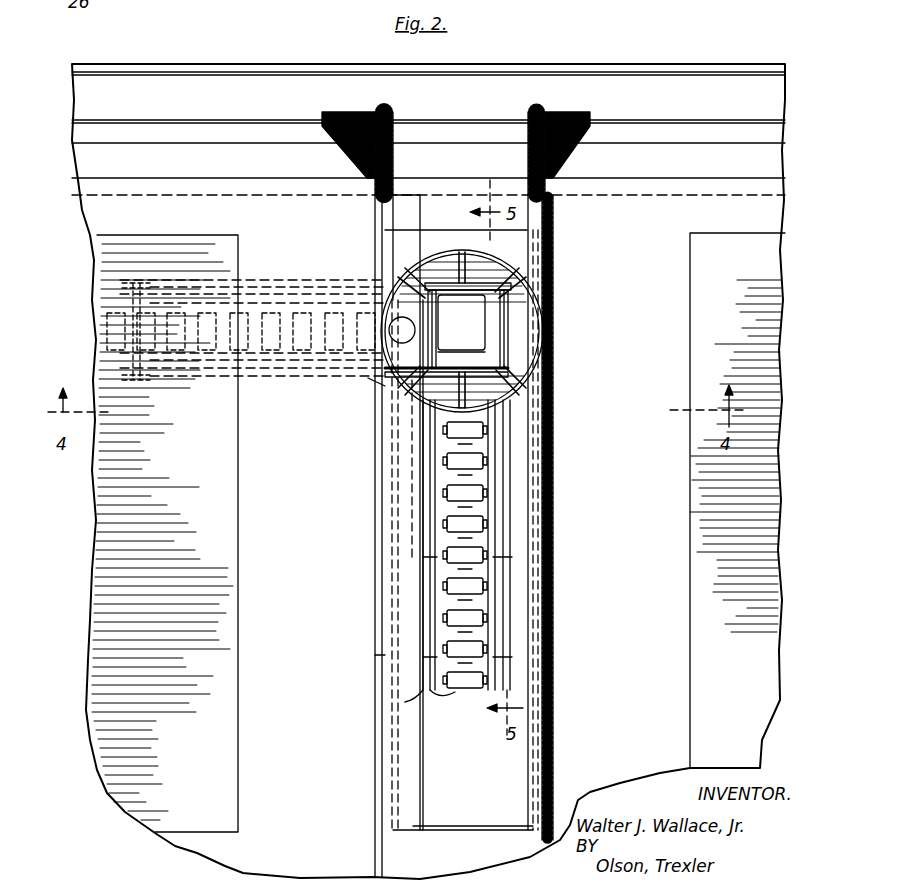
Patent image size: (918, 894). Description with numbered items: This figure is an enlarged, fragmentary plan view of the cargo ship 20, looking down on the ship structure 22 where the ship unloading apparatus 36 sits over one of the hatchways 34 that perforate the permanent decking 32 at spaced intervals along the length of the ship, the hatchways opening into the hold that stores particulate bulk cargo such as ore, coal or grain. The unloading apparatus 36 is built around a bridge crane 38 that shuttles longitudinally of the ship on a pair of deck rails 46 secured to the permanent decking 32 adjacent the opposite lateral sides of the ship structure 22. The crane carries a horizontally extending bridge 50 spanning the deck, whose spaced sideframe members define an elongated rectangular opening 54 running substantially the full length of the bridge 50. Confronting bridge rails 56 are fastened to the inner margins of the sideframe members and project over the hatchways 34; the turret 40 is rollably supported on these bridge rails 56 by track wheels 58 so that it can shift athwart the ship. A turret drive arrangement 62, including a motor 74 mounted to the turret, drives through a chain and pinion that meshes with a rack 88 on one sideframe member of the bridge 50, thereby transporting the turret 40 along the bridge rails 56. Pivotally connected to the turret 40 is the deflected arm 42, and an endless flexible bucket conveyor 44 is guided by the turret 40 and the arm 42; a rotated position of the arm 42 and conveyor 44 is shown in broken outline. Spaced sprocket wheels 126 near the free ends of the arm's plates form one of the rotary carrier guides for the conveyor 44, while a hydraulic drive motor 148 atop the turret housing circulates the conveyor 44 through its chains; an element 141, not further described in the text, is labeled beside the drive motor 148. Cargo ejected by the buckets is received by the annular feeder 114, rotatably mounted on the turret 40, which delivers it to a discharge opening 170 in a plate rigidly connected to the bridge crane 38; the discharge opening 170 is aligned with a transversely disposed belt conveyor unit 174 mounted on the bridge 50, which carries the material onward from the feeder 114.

The cargo ship 20 is at (160, 855).
The ship structure 22 is at (297, 63).
The permanent decking 32 is at (441, 532).
The hatchways 34 is at (234, 622).
The ship unloading apparatus 36 is at (577, 270).
The bridge crane 38 is at (573, 112).
The turret 40 is at (441, 251).
The deflected arm 42 is at (287, 383).
The endless flexible bucket conveyor 44 is at (100, 331).
The deck rails 46 is at (712, 132).
The bridge 50 is at (374, 863).
The rectangular opening 54 is at (505, 773).
The bridge rails 56 is at (397, 435).
The track wheels 58 is at (385, 277).
The turret drive arrangement 62 is at (552, 300).
The motor 74 is at (540, 345).
The rack 88 is at (548, 214).
The annular feeder 114 is at (535, 370).
The sprocket wheels 126 is at (440, 672).
The key 141 is at (461, 360).
The hydraulic drive motor 148 is at (461, 322).
The discharge opening 170 is at (370, 372).
The belt conveyor unit 174 is at (376, 655).